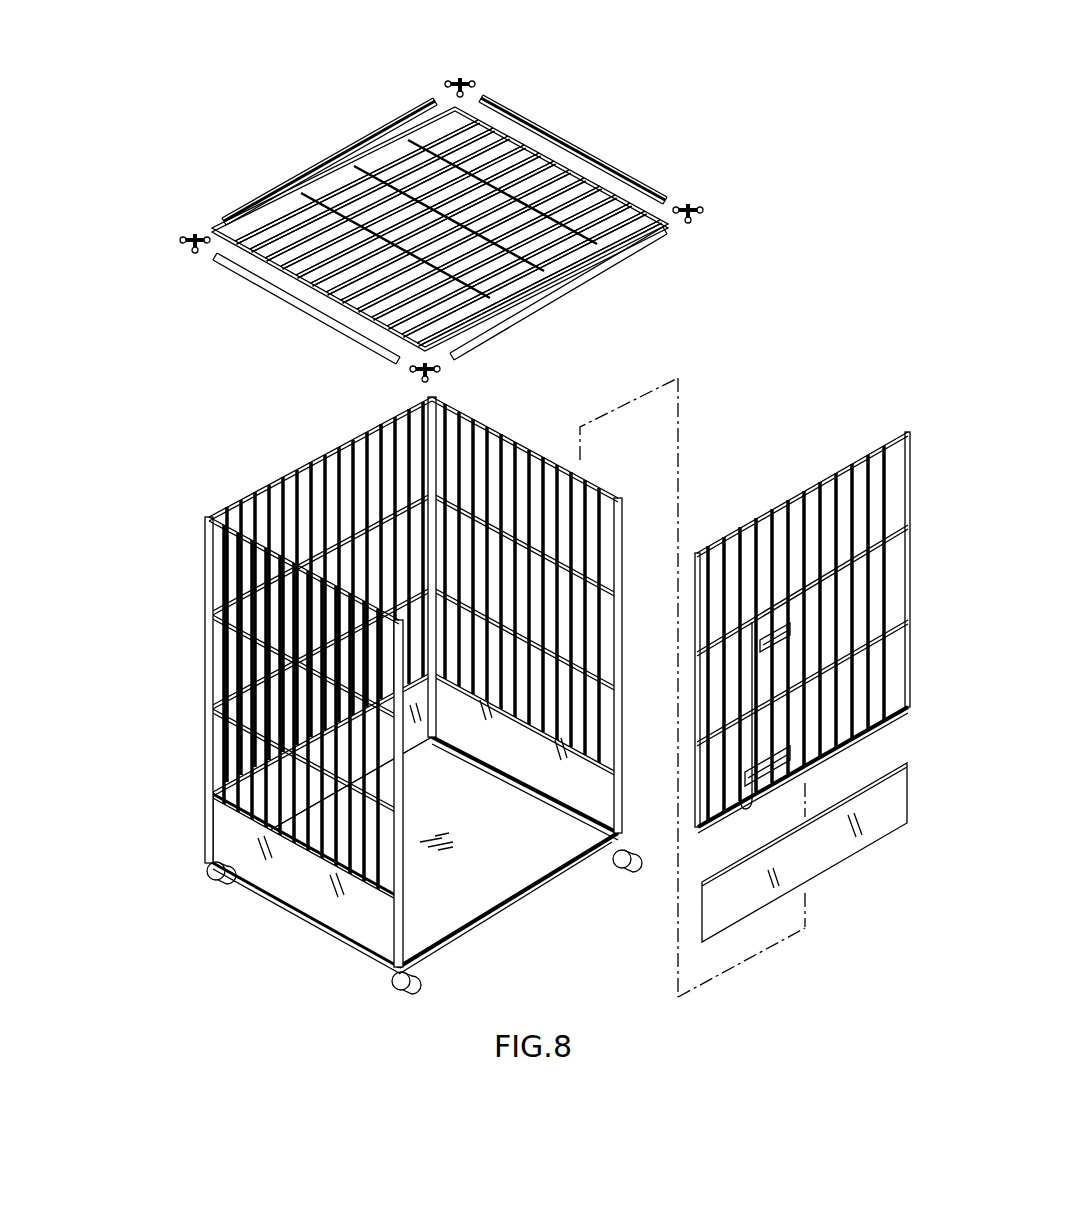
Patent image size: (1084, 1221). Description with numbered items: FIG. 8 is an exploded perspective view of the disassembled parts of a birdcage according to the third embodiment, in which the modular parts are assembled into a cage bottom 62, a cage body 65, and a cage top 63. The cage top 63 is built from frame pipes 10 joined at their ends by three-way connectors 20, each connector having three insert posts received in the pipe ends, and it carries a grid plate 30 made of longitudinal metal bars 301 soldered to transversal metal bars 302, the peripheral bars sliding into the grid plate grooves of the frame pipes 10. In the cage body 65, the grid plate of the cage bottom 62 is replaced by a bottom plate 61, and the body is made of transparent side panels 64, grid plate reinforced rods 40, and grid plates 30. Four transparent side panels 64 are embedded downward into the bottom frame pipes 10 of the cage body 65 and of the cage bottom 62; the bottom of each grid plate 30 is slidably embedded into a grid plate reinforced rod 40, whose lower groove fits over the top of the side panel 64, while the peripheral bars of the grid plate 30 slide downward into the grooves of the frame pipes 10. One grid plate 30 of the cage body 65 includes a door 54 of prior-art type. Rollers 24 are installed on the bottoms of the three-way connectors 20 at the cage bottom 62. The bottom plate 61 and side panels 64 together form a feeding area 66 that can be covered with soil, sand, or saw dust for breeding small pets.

The frame pipe 10 is at (537, 112).
The three-way connector 20 is at (445, 82).
The roller 24 is at (422, 945).
The grid plate 30 is at (575, 198).
The longitudinal metal bar 301 is at (630, 240).
The transversal metal bar 302 is at (585, 222).
The grid plate reinforced rod 40 is at (210, 783).
The door 54 is at (765, 795).
The bottom plate 61 is at (508, 903).
The cage bottom 62 is at (521, 873).
The cage top 63 is at (543, 429).
The transparent side panel 64 is at (312, 905).
The cage body 65 is at (509, 537).
The feeding area 66 is at (433, 809).